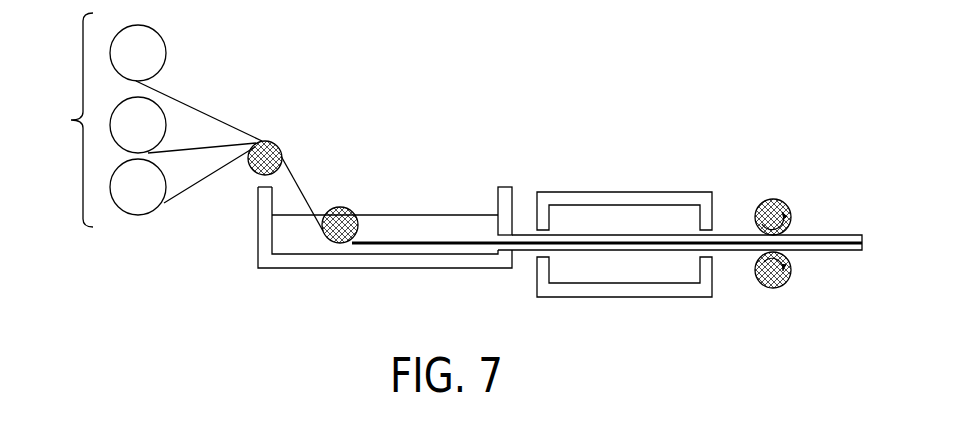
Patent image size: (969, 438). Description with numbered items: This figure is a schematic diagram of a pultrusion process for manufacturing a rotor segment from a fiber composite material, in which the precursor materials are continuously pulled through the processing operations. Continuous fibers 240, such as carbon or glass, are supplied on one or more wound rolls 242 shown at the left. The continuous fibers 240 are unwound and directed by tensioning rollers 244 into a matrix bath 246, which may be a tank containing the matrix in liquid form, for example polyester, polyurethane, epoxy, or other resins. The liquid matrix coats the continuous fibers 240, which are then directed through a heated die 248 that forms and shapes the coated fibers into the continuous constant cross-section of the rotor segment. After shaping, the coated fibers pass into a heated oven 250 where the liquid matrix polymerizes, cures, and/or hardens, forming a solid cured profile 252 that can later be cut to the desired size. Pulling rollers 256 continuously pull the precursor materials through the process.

The continuous fibers 240 is at (213, 110).
The wound rolls 242 is at (99, 120).
The tensioning rollers 244 is at (340, 200).
The matrix bath 246 is at (412, 212).
The heated die 248 is at (520, 233).
The heated oven 250 is at (613, 188).
The cured profile 252 is at (832, 233).
The pulling rollers 256 is at (773, 200).